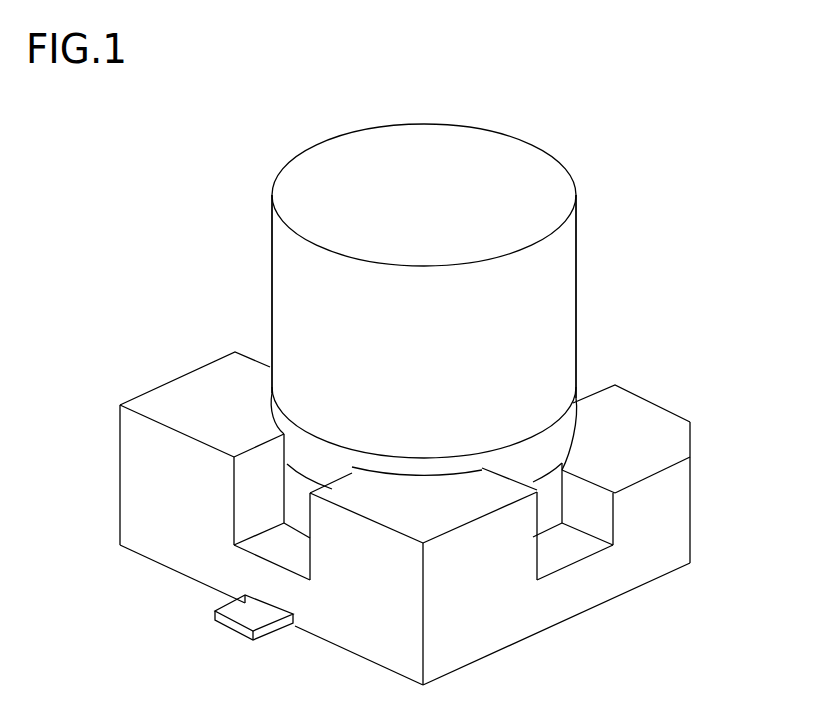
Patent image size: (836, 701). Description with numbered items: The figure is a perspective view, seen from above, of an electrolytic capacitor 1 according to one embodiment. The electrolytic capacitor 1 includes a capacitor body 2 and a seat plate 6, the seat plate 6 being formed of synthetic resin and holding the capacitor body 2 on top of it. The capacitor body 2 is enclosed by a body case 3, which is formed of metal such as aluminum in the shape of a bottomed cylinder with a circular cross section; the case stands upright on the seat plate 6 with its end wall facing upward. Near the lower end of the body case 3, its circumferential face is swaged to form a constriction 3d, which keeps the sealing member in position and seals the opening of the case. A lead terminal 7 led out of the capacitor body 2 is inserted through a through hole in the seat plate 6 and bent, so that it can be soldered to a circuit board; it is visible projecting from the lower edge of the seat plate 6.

The electrolytic capacitor 1 is at (583, 149).
The capacitor body 2 is at (568, 268).
The body case 3 is at (568, 325).
The constriction 3d is at (558, 438).
The seat plate 6 is at (675, 517).
The lead terminal 7 is at (228, 610).